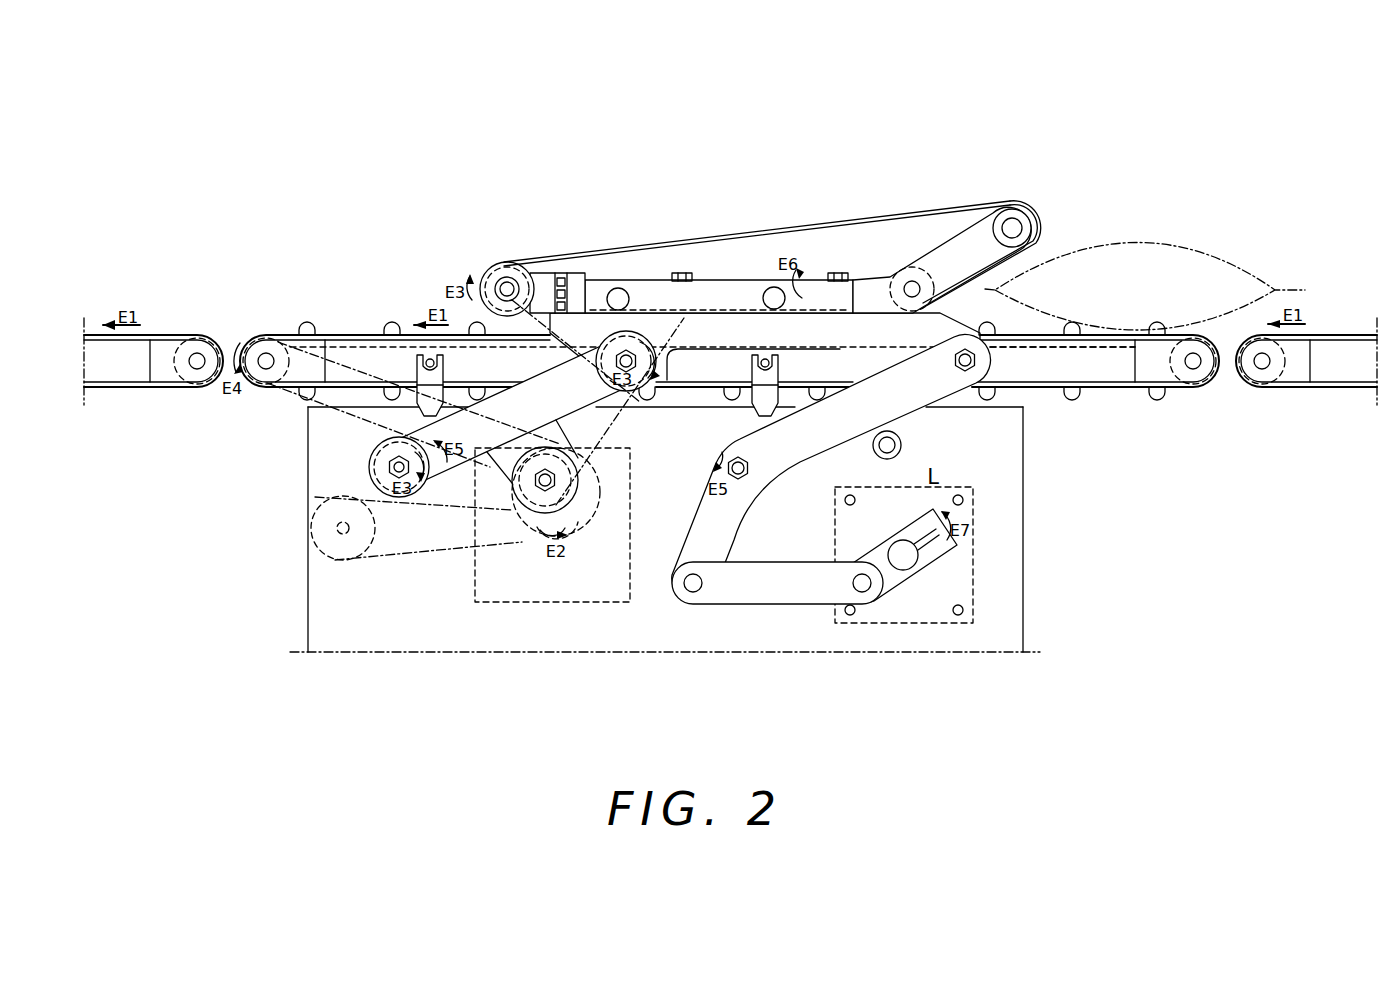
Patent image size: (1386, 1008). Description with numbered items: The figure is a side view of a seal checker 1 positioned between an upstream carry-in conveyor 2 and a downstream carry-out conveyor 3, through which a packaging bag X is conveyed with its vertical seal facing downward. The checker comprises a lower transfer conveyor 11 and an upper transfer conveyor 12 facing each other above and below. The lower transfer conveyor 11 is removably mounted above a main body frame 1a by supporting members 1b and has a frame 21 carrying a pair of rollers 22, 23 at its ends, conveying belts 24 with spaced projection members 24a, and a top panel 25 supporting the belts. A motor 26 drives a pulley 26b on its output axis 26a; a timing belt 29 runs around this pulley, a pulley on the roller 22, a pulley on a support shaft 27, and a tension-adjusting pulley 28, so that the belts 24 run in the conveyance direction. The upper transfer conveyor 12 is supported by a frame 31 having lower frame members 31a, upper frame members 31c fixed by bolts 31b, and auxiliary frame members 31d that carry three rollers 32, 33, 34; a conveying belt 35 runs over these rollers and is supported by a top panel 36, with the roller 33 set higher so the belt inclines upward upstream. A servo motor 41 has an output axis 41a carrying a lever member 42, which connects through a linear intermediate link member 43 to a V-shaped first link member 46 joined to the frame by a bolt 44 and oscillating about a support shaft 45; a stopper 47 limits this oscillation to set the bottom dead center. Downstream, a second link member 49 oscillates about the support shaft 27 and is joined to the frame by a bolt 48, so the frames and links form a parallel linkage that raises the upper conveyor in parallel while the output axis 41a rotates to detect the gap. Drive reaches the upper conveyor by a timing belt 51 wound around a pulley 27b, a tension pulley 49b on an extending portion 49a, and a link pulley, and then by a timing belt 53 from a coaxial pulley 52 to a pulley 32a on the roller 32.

The seal checker 1 is at (690, 370).
The main body frame 1a is at (1027, 530).
The supporting member 1b is at (436, 383).
The carry-in conveyor 2 is at (1335, 312).
The carry-out conveyor 3 is at (158, 310).
The lower transfer conveyor 11 is at (730, 371).
The upper transfer conveyor 12 is at (753, 273).
The frame 21 is at (1032, 380).
The roller 22 is at (268, 390).
The roller 23 is at (1193, 380).
The conveying belt 24 is at (345, 332).
The projection member 24a is at (303, 327).
The top panel 25 is at (1025, 340).
The motor 26 is at (552, 550).
The output axis 26a is at (565, 510).
The pulley 26b is at (535, 543).
The support shaft 27 is at (373, 464).
The pulley 27b is at (375, 470).
The pulley 28 is at (311, 538).
The timing belt 29 is at (425, 560).
The frame 31 is at (790, 278).
The lower frame member 31a is at (765, 346).
The bolt 31b is at (679, 272).
The upper frame member 31c is at (719, 296).
The auxiliary frame member 31d is at (973, 237).
The roller 32 is at (483, 263).
The pulley 32a is at (485, 270).
The roller 33 is at (1038, 218).
The roller 34 is at (908, 268).
The conveying belt 35 is at (800, 225).
The top panel 36 is at (726, 311).
The servo motor 41 is at (942, 497).
The output axis 41a is at (908, 560).
The lever member 42 is at (901, 569).
The intermediate link member 43 is at (766, 572).
The bolt 44 is at (955, 366).
The support shaft 45 is at (748, 472).
The first link member 46 is at (814, 468).
The stopper 47 is at (873, 452).
The bolt 48 is at (612, 370).
The second link member 49 is at (513, 475).
The extending portion 49a is at (507, 462).
The pulley 49b is at (523, 493).
The timing belt 51 is at (625, 427).
The pulley 52 is at (648, 352).
The timing belt 53 is at (575, 284).
The packaging bag X is at (1200, 262).